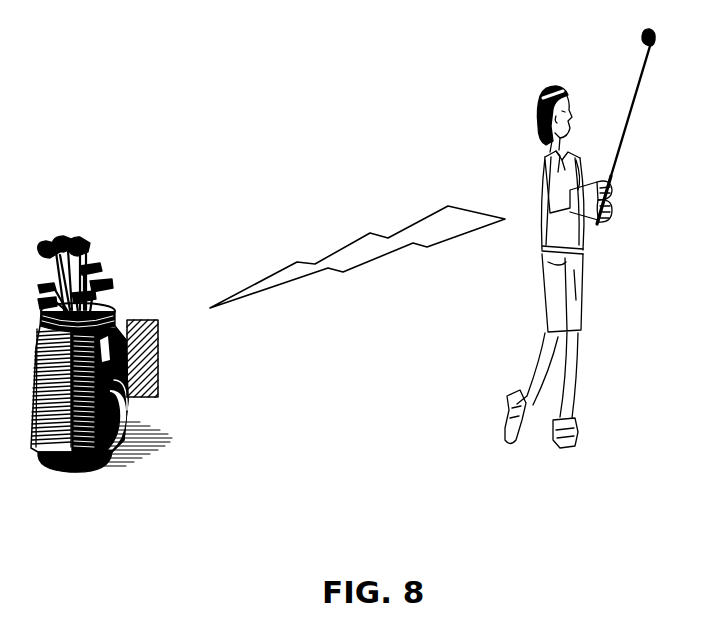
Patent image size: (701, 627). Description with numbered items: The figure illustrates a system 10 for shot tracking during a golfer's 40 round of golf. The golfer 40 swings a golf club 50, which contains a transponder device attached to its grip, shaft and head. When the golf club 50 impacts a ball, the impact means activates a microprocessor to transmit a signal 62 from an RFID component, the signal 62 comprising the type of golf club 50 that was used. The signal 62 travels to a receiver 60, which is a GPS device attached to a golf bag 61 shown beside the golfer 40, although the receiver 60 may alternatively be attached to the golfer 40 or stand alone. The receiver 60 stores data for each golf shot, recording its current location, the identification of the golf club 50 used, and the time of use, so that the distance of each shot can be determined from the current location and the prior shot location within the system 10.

The system 10 is at (294, 143).
The golfer 40 is at (558, 82).
The golf club 50 is at (633, 126).
The receiver 60 is at (155, 388).
The golf bag 61 is at (95, 226).
The signal 62 is at (428, 247).